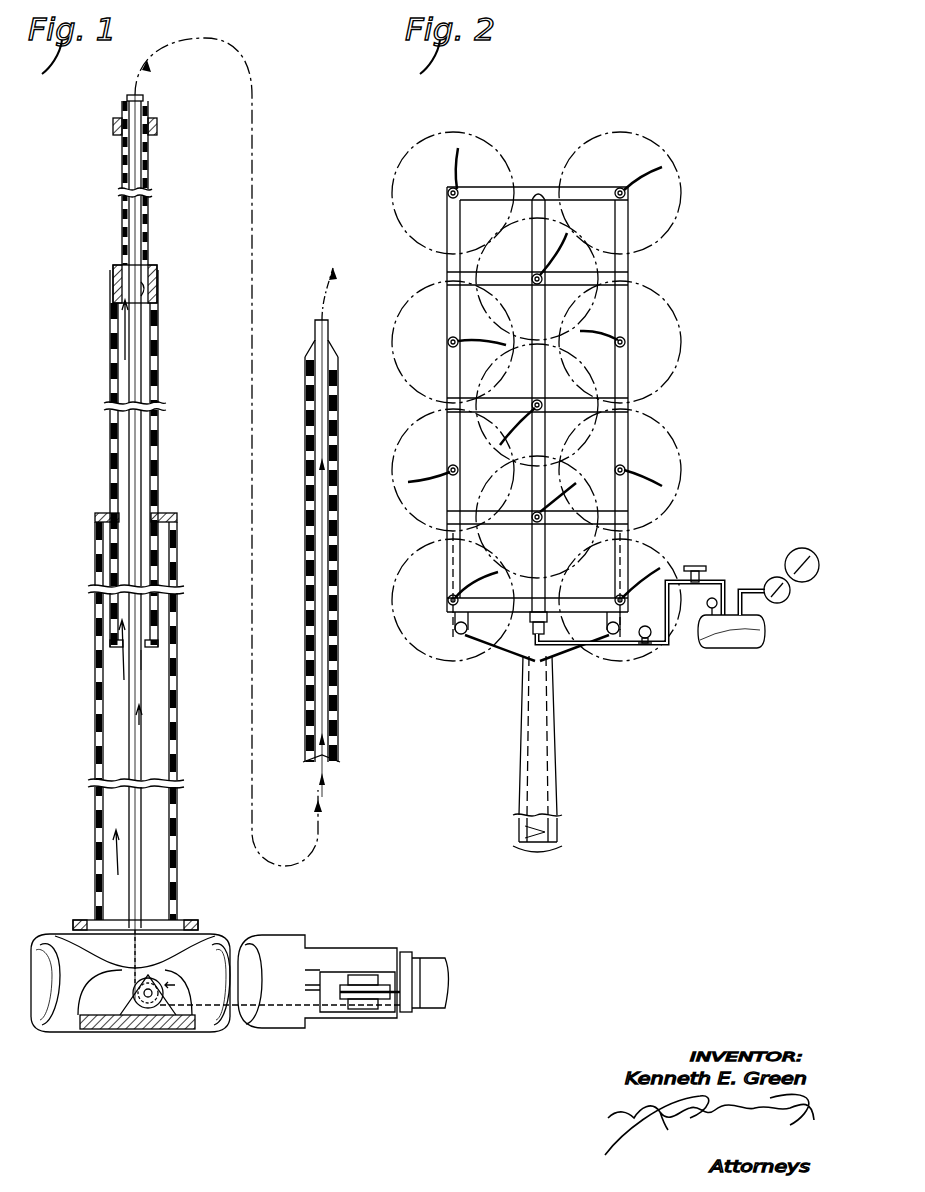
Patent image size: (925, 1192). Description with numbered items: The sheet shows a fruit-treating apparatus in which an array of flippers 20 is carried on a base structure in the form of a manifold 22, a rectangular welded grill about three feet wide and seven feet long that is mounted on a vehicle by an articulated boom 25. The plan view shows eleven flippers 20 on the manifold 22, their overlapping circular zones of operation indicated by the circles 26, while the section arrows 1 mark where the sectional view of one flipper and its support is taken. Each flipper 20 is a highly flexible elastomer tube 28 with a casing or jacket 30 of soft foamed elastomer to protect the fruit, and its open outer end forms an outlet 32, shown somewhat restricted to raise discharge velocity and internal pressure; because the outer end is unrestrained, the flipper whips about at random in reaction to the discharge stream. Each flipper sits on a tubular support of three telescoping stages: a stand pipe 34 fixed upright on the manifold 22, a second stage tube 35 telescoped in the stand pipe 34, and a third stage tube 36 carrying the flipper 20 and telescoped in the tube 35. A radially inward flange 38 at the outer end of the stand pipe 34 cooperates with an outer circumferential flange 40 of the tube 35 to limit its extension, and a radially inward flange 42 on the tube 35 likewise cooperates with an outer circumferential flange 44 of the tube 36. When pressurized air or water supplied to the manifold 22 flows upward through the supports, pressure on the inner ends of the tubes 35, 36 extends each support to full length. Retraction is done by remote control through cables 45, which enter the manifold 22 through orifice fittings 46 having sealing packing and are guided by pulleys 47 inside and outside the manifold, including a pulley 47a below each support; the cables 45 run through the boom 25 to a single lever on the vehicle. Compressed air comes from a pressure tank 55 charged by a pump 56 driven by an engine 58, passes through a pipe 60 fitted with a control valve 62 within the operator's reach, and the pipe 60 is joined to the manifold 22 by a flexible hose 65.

In FIG. 2, the section line of FIG. 1 is at (446, 567).
In FIG. 1, the flipper 20 is at (150, 98).
In FIG. 2, the flipper 20 is at (458, 188).
In FIG. 1, the manifold 22 is at (100, 1038).
In FIG. 2, the manifold 22 is at (632, 304).
In FIG. 2, the articulated boom 25 is at (558, 783).
In FIG. 2, the circles 26 is at (680, 172).
In FIG. 1, the elastomer tube 28 is at (317, 478).
In FIG. 1, the casing or jacket 30 is at (338, 553).
In FIG. 1, the outlet 32 is at (325, 318).
In FIG. 1, the stand pipe 34 is at (178, 701).
In FIG. 2, the stand pipe 34 is at (627, 196).
In FIG. 1, the second stage tube 35 is at (160, 429).
In FIG. 1, the third stage tube 36 is at (151, 221).
In FIG. 2, the third stage tube 36 is at (549, 668).
In FIG. 1, the radially inward flange 38 is at (162, 513).
In FIG. 1, the outer circumferential flange 40 is at (157, 647).
In FIG. 1, the radially inward flange 42 is at (149, 271).
In FIG. 1, the outer circumferential flange 44 is at (158, 296).
In FIG. 1, the cables 45 is at (142, 918).
In FIG. 2, the cables 45 is at (546, 836).
In FIG. 1, the orifice fittings 46 is at (322, 1015).
In FIG. 1, the pulleys 47 is at (386, 1010).
In FIG. 2, the pulleys 47 is at (472, 636).
In FIG. 1, the pulley 47a is at (153, 979).
In FIG. 2, the pressure tank 55 is at (766, 636).
In FIG. 2, the pump 56 is at (775, 603).
In FIG. 2, the engine 58 is at (790, 582).
In FIG. 2, the pipe 60 is at (705, 582).
In FIG. 2, the control valve 62 is at (698, 566).
In FIG. 1, the flexible hose 65 is at (431, 958).
In FIG. 2, the flexible hose 65 is at (660, 648).